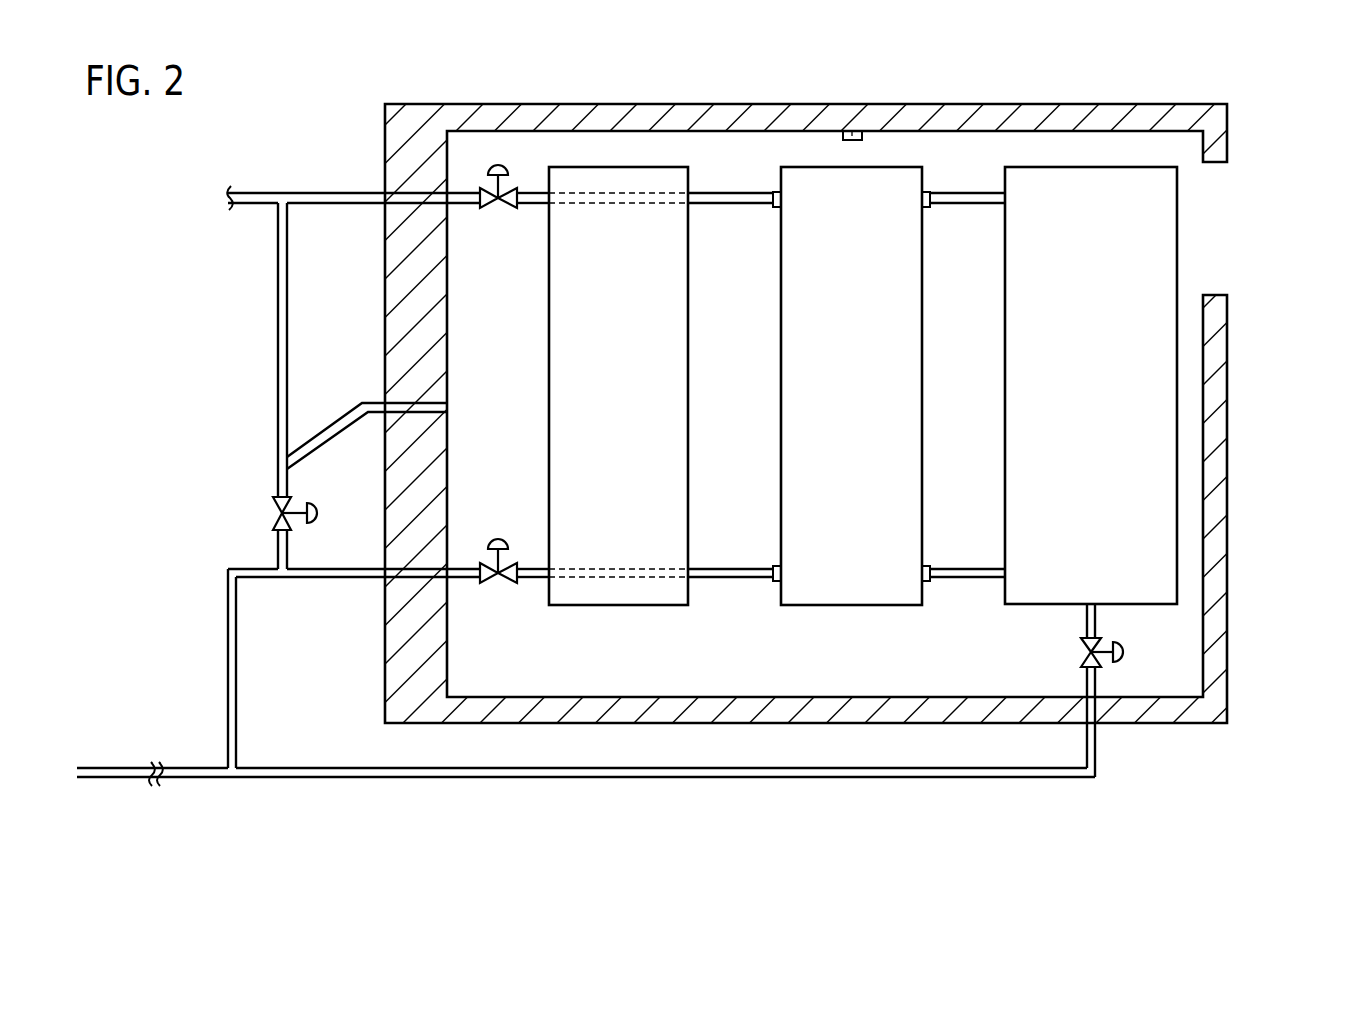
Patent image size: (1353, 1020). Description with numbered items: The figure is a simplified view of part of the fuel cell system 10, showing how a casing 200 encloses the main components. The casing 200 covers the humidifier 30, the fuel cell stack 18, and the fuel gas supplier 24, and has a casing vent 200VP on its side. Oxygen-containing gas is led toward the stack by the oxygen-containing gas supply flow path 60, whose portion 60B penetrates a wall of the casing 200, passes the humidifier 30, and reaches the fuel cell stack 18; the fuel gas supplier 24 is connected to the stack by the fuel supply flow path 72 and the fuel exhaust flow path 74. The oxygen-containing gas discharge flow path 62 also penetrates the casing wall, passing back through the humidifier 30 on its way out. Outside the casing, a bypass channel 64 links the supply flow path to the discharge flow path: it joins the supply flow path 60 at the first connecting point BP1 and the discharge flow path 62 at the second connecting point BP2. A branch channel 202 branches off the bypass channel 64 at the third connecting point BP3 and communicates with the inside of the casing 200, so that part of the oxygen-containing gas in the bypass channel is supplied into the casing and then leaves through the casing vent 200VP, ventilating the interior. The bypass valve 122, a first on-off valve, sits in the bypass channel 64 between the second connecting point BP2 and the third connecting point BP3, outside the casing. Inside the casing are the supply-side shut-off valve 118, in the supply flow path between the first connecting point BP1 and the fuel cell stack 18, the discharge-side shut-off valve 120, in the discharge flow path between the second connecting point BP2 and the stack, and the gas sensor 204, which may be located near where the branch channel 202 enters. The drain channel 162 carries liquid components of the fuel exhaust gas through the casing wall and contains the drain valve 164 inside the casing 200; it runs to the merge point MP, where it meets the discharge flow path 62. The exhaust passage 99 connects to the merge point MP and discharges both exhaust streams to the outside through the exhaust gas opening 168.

The fuel cell system 10 is at (1006, 69).
The casing 200 is at (1165, 104).
The casing vent 200VP is at (1215, 196).
The gas sensor 204 is at (852, 138).
The humidifier 30 is at (591, 167).
The fuel cell stack 18 is at (835, 167).
The fuel gas supplier 24 is at (1089, 167).
The oxygen-containing gas supply flow path 60 is at (333, 192).
The oxygen-containing gas supply flow path 60B is at (720, 205).
The fuel supply flow path 72 is at (968, 205).
The supply-side shut-off valve 118 is at (498, 164).
The discharge-side shut-off valve 120 is at (503, 540).
The bypass valve 122 is at (272, 518).
The drain valve 164 is at (1126, 654).
The first connecting point BP1 is at (291, 211).
The second connecting point BP2 is at (295, 561).
The third connecting point BP3 is at (295, 445).
The branch channel 202 is at (372, 403).
The bypass channel 64 is at (277, 545).
The oxygen-containing gas discharge flow path 62 is at (462, 579).
The fuel exhaust flow path 74 is at (972, 567).
The merge point MP is at (241, 765).
The exhaust gas opening 168 is at (106, 778).
The exhaust passage 99 is at (186, 778).
The drain channel 162 is at (855, 779).